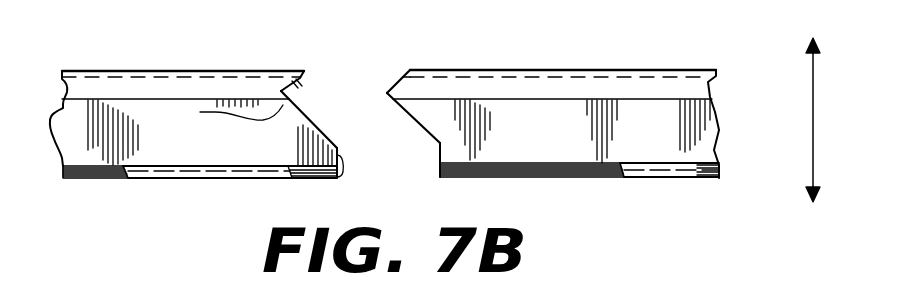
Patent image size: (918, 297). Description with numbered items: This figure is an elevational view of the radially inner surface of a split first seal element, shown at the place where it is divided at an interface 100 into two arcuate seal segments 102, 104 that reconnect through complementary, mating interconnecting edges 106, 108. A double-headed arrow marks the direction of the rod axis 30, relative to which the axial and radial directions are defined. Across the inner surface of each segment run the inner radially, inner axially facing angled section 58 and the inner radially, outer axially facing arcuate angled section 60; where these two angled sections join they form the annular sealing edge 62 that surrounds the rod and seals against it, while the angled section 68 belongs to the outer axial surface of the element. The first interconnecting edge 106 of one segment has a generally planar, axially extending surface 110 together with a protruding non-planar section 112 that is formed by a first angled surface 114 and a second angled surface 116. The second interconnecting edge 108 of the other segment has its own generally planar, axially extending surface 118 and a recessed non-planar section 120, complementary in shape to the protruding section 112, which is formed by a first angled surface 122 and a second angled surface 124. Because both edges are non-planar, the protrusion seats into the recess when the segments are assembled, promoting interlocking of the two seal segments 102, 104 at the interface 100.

The rod axis 30 is at (813, 103).
The inner radially, inner axially facing angled section 58 is at (254, 170).
The inner radially, outer axially facing arcuate angled section 60 is at (200, 152).
The annular sealing edge 62 is at (125, 167).
The angled section of the outer axial surface 68 is at (155, 89).
The interface 100 is at (369, 52).
The arcuate seal segment 102 is at (637, 118).
The arcuate seal segment 104 is at (110, 127).
The first interconnecting edge 106 is at (402, 157).
The second interconnecting edge 108 is at (327, 92).
The planar, axially extending surface 110 is at (442, 163).
The protruding non-planar section 112 is at (368, 120).
The first angled surface 114 is at (423, 125).
The second angled surface 116 is at (400, 83).
The planar, axially extending surface 118 is at (343, 157).
The recessed non-planar section 120 is at (305, 86).
The first angled surface 122 is at (219, 115).
The second angled surface 124 is at (265, 71).